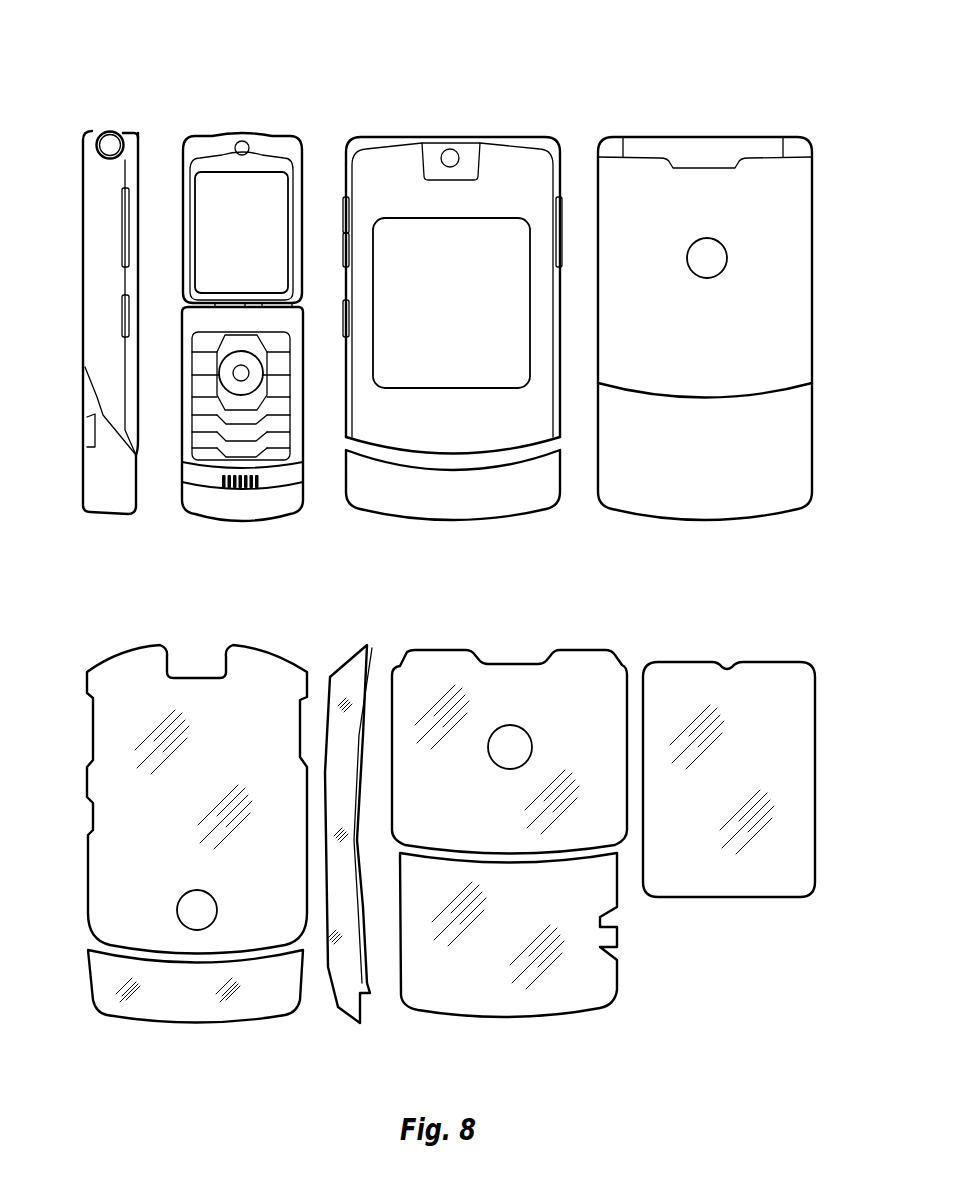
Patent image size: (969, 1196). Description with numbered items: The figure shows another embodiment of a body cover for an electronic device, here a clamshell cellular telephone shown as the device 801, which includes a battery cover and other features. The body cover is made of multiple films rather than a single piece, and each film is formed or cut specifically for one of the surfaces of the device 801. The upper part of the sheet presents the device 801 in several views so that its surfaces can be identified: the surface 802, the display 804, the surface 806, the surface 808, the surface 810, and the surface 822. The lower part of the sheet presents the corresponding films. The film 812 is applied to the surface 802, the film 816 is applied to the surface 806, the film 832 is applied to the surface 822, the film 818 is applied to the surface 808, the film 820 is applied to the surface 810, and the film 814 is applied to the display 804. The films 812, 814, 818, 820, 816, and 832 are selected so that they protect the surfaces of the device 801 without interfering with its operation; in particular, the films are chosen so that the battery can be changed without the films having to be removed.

The device 801 is at (694, 56).
The surface 802 is at (107, 235).
The display 804 is at (252, 226).
The surface 806 is at (455, 277).
The surface 808 is at (713, 305).
The surface 810 is at (712, 465).
The surface 822 is at (242, 512).
The film 816 is at (191, 693).
The film 832 is at (187, 1003).
The film 812 is at (346, 688).
The film 818 is at (515, 697).
The film 820 is at (547, 988).
The film 814 is at (722, 688).